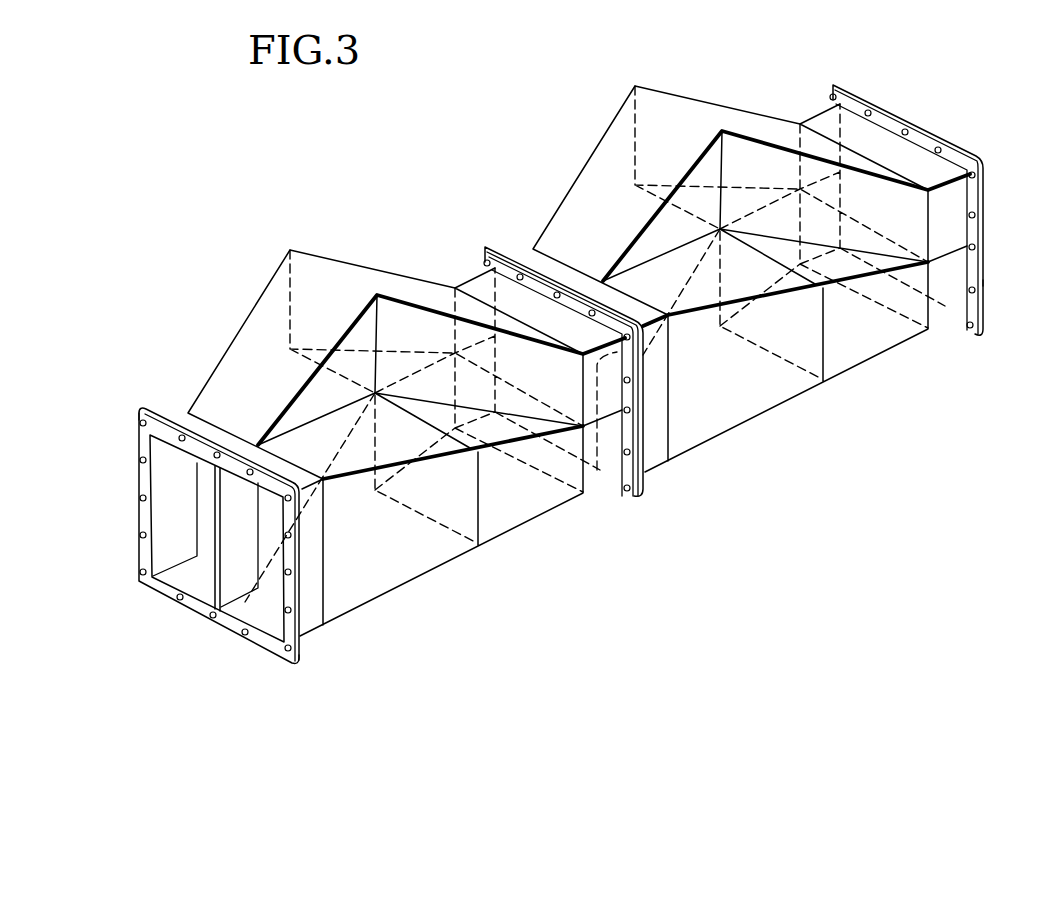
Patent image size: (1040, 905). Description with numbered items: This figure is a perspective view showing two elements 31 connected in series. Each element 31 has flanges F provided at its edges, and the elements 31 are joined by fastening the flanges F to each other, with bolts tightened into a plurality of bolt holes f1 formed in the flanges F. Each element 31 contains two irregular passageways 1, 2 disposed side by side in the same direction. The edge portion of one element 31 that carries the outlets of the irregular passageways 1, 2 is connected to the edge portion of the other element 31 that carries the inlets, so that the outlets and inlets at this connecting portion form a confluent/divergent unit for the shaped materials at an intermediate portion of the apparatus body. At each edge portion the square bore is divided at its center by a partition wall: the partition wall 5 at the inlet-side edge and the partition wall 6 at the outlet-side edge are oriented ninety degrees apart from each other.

The irregular passageway 1 is at (191, 570).
The irregular passageway 2 is at (258, 608).
The partition wall 5 is at (217, 582).
The partition wall 6 is at (597, 470).
The element 31 is at (356, 265).
The flange F is at (137, 487).
The bolt hole f1 is at (138, 413).